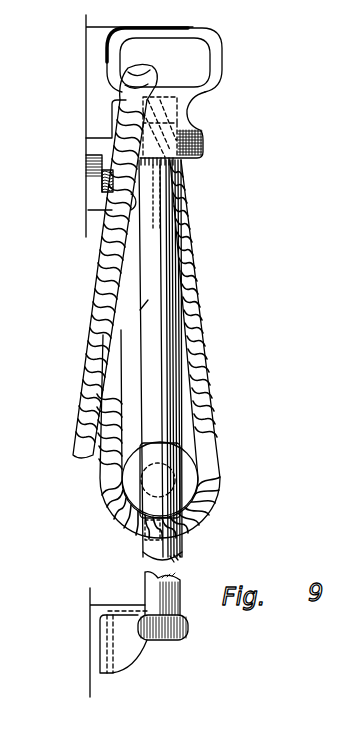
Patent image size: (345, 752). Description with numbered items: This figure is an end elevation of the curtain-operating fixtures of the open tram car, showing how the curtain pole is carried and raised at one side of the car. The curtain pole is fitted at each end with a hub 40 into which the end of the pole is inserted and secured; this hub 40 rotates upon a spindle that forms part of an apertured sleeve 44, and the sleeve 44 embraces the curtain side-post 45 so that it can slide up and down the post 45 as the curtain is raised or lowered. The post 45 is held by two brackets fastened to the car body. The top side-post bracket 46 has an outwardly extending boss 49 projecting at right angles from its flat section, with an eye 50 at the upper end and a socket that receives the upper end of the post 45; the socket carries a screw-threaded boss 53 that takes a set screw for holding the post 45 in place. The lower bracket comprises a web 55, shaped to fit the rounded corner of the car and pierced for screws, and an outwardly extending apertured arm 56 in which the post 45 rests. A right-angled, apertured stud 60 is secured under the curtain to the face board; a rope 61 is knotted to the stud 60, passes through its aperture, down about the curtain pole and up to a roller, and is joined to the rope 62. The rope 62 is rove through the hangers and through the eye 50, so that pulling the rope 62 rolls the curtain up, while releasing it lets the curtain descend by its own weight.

The hub 40 is at (195, 472).
The apertured sleeve 44 is at (150, 458).
The curtain side-post 45 is at (136, 313).
The top side-post bracket 46 is at (140, 593).
The boss 49 is at (183, 122).
The eye 50 is at (164, 60).
The boss 53 is at (188, 158).
The web 55 is at (95, 647).
The arm 56 is at (188, 627).
The right-angled stud 60 is at (91, 200).
The rope 61 is at (188, 276).
The rope 62 is at (130, 87).